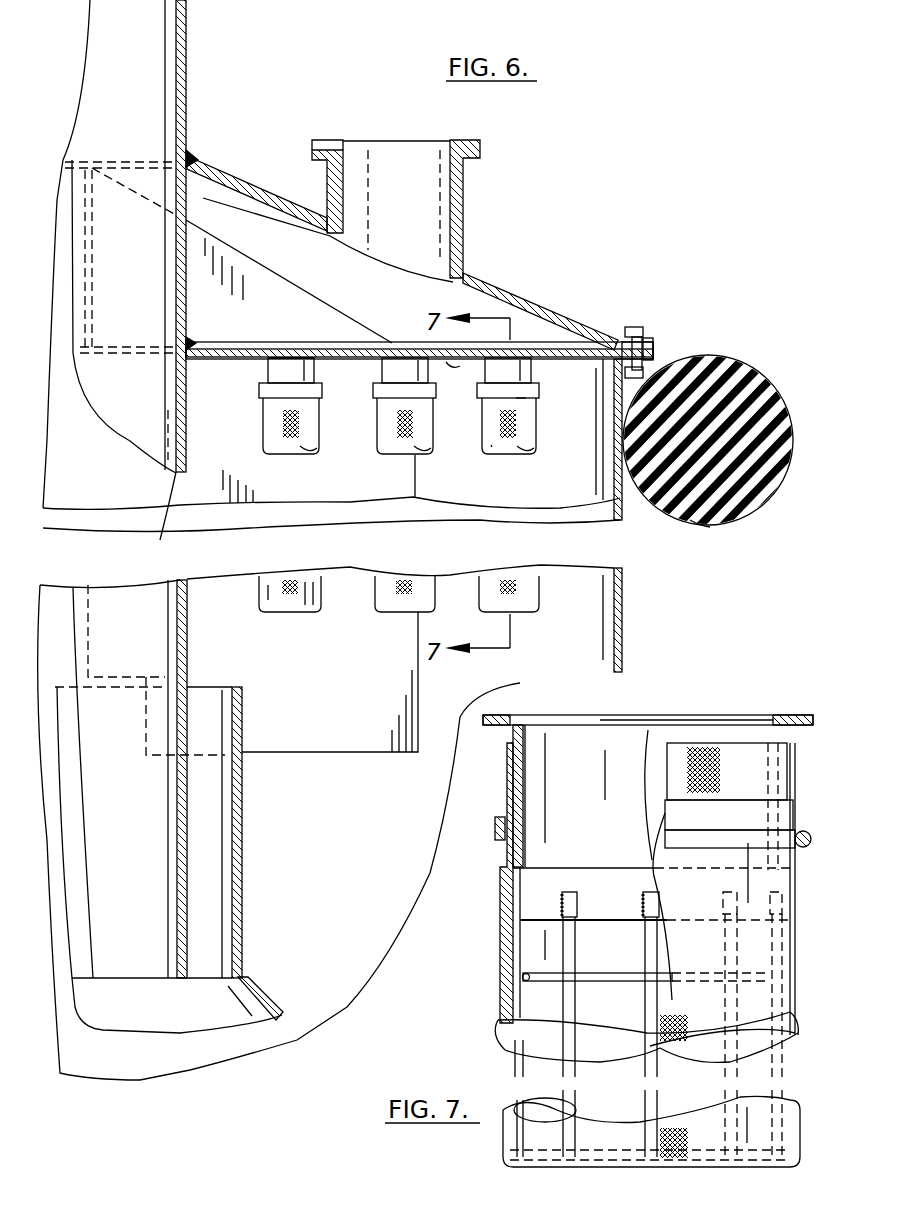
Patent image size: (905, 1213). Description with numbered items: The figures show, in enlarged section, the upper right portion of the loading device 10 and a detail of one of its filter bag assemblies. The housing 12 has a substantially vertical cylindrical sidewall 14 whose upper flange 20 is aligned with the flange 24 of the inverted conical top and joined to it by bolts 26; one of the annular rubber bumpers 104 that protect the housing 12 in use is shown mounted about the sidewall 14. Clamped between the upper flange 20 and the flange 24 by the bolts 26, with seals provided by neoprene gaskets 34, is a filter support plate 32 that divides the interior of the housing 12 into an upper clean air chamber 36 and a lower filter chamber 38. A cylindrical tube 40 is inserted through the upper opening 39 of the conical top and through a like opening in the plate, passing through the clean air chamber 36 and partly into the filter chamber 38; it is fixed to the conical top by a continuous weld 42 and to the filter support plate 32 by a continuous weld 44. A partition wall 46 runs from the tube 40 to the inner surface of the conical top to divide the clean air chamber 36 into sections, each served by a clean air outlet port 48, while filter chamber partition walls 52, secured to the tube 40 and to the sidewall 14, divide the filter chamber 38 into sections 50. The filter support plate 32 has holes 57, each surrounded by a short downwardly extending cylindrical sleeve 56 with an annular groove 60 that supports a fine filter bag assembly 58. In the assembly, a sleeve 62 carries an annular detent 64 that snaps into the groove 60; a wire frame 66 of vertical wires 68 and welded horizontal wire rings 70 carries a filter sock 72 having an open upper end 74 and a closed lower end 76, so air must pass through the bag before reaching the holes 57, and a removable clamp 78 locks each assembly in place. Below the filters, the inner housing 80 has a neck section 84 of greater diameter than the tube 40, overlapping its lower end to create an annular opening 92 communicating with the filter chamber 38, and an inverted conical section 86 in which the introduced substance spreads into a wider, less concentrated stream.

In FIG. 6, the loading device 10 is at (630, 247).
In FIG. 6, the housing 12 is at (626, 650).
In FIG. 6, the vertical cylindrical sidewall 14 is at (622, 520).
In FIG. 6, the upper flange 20 is at (712, 356).
In FIG. 6, the flange 24 is at (653, 340).
In FIG. 6, the bolts 26 is at (634, 327).
In FIG. 6, the filter support plate 32 is at (578, 360).
In FIG. 7, the filter support plate 32 is at (800, 715).
In FIG. 6, the neoprene gaskets 34 is at (656, 352).
In FIG. 6, the clean air chamber 36 is at (245, 205).
In FIG. 6, the filter chamber 38 is at (578, 612).
In FIG. 6, the upper opening 39 is at (66, 160).
In FIG. 6, the cylindrical tube 40 is at (186, 64).
In FIG. 6, the continuous weld 42 is at (190, 158).
In FIG. 6, the continuous weld 44 is at (190, 340).
In FIG. 6, the partition walls 46 is at (317, 312).
In FIG. 6, the clean air outlet port 48 is at (463, 200).
In FIG. 6, the sections 50 is at (523, 640).
In FIG. 6, the filter chamber partition walls 52 is at (360, 492).
In FIG. 6, the cylindrical sleeve 56 is at (497, 362).
In FIG. 7, the cylindrical sleeve 56 is at (523, 788).
In FIG. 6, the holes 57 is at (283, 358).
In FIG. 7, the holes 57 is at (637, 715).
In FIG. 6, the fine filter bag assembly 58 is at (310, 616).
In FIG. 7, the fine filter bag assembly 58 is at (490, 937).
In FIG. 7, the annular groove 60 is at (643, 842).
In FIG. 7, the sleeve 62 is at (498, 818).
In FIG. 7, the annular detent 64 is at (500, 853).
In FIG. 7, the wire frame 66 is at (558, 930).
In FIG. 7, the vertical wires 68 is at (647, 938).
In FIG. 7, the horizontal wire rings 70 is at (608, 982).
In FIG. 6, the filter sock 72 is at (493, 445).
In FIG. 7, the filter sock 72 is at (520, 1097).
In FIG. 7, the open upper end 74 is at (693, 743).
In FIG. 7, the closed lower end 76 is at (523, 1168).
In FIG. 6, the removable clamp 78 is at (534, 398).
In FIG. 7, the removable clamp 78 is at (809, 841).
In FIG. 6, the inner housing 80 is at (284, 953).
In FIG. 6, the neck section 84 is at (243, 845).
In FIG. 6, the inverted conical section 86 is at (273, 1003).
In FIG. 6, the annular opening 92 is at (205, 713).
In FIG. 6, the annular rubber bumpers 104 is at (722, 522).